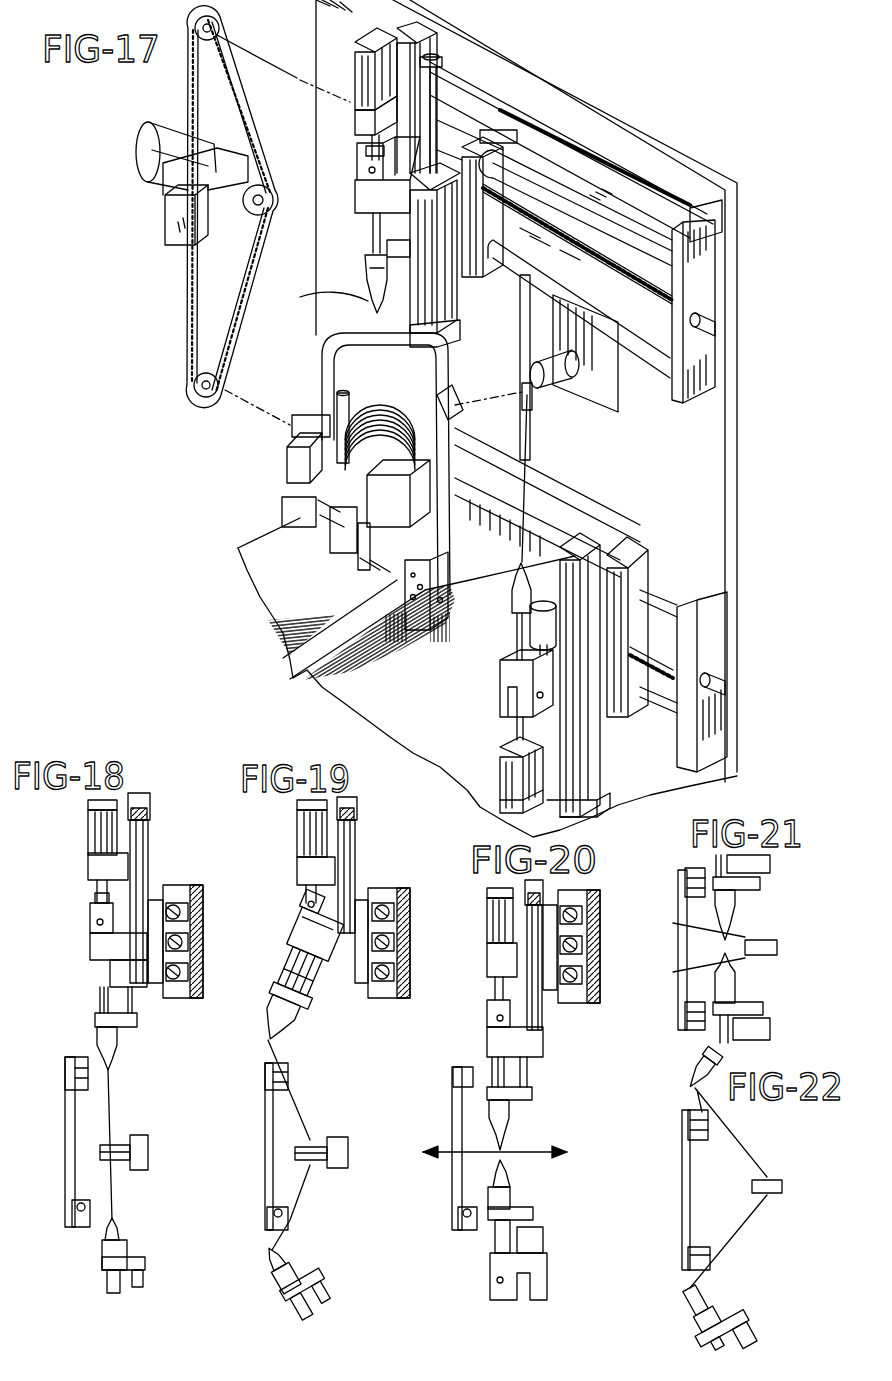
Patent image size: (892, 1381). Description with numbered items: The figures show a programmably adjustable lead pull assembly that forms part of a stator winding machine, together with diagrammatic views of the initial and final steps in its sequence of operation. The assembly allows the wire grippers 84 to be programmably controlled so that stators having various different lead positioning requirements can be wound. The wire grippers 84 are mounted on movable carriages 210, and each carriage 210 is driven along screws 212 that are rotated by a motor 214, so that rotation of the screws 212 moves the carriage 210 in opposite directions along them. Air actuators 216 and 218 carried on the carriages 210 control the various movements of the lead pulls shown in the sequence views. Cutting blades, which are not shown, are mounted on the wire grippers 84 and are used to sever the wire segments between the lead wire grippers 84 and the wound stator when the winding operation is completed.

In FIG. 17, the wire grippers 84 is at (590, 490).
In FIG. 18, the wire grippers 84 is at (100, 1060).
In FIG. 19, the wire grippers 84 is at (262, 1038).
In FIG. 20, the wire grippers 84 is at (503, 1170).
In FIG. 21, the wire grippers 84 is at (735, 925).
In FIG. 22, the wire grippers 84 is at (690, 1080).
In FIG. 17, the movable carriages 210 is at (500, 110).
In FIG. 17, the screws 212 is at (660, 290).
In FIG. 18, the screws 212 is at (203, 938).
In FIG. 19, the screws 212 is at (410, 940).
In FIG. 20, the screws 212 is at (600, 940).
In FIG. 17, the motor 214 is at (135, 140).
In FIG. 17, the air actuator 216 is at (390, 227).
In FIG. 18, the air actuator 216 is at (118, 975).
In FIG. 19, the air actuator 216 is at (347, 978).
In FIG. 17, the air actuator 218 is at (352, 70).
In FIG. 18, the air actuator 218 is at (105, 830).
In FIG. 19, the air actuator 218 is at (315, 830).
In FIG. 20, the air actuator 218 is at (497, 921).